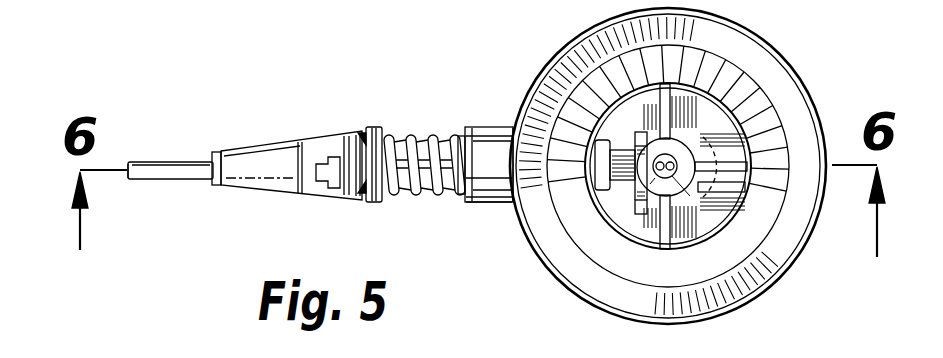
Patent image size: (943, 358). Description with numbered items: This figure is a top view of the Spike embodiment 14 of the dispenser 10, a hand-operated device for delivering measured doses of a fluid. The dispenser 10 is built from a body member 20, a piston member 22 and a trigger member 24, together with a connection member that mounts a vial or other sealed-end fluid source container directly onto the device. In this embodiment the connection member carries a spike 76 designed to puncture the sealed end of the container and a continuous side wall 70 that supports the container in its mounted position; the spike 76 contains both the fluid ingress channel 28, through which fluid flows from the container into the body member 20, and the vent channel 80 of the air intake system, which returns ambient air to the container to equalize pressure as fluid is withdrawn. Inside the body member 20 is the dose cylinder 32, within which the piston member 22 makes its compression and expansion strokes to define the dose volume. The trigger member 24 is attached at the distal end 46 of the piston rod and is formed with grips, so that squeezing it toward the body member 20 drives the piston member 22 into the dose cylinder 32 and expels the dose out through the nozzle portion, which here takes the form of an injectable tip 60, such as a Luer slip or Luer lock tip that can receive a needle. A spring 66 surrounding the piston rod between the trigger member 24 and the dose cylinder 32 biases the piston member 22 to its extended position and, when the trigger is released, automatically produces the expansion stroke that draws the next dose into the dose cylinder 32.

The dispenser 10 is at (485, 44).
The Spike embodiment 14 is at (820, 77).
The body member 20 is at (515, 240).
The piston member 22 is at (450, 210).
The trigger member 24 is at (278, 130).
The fluid ingress channel 28 is at (690, 196).
The dose cylinder 32 is at (487, 145).
The distal end 46 is at (150, 137).
The injectable tip 60 is at (182, 160).
The spring 66 is at (425, 137).
The continuous side wall 70 is at (797, 262).
The spike 76 is at (686, 148).
The vent channel 80 is at (664, 168).